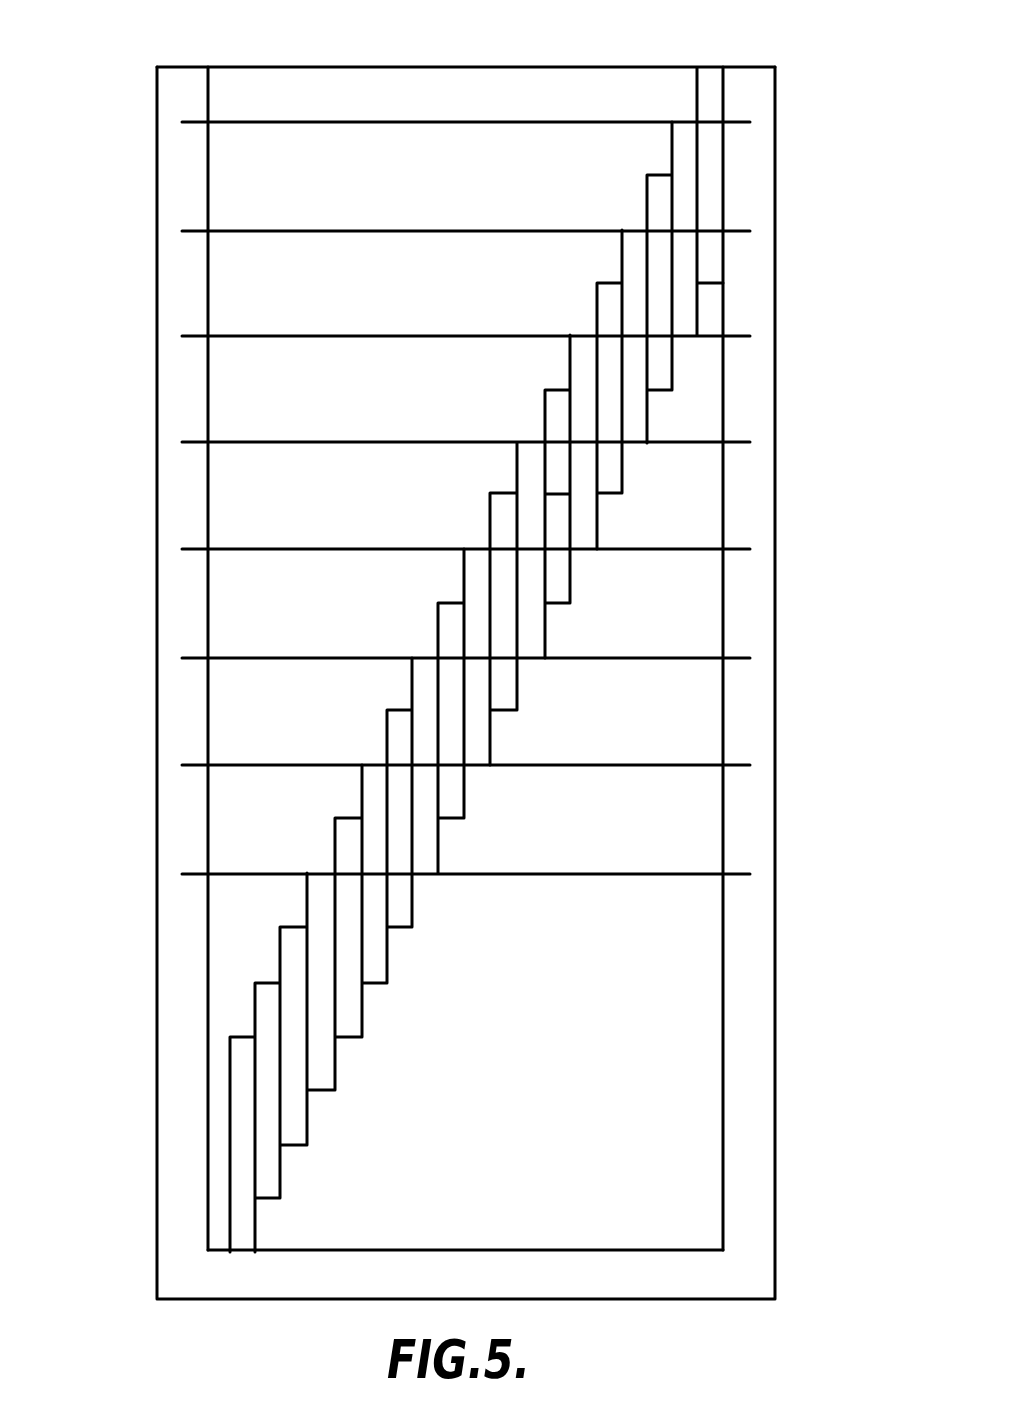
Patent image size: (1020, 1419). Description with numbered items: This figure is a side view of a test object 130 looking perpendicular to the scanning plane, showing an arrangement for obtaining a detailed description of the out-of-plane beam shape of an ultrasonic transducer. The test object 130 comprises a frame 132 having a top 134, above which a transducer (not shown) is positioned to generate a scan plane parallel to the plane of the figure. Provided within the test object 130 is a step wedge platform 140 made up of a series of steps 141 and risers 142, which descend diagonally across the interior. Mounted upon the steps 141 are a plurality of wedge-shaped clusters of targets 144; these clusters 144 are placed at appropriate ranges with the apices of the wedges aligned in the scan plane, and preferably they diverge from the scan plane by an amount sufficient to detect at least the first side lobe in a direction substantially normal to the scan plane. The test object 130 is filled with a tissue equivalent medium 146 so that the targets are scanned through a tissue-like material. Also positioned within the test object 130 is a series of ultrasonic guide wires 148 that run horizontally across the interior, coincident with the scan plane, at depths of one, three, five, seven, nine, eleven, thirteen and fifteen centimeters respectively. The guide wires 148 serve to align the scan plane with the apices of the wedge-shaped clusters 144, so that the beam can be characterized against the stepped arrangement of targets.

The test object 130 is at (775, 950).
The frame 132 is at (755, 812).
The top 134 is at (633, 67).
The step wedge platform 140 is at (667, 710).
The steps 141 is at (505, 605).
The risers 142 is at (360, 900).
The wedge-shaped clusters of targets 144 is at (447, 619).
The tissue equivalent medium 146 is at (240, 713).
The ultrasonic guide wires 148 is at (262, 442).